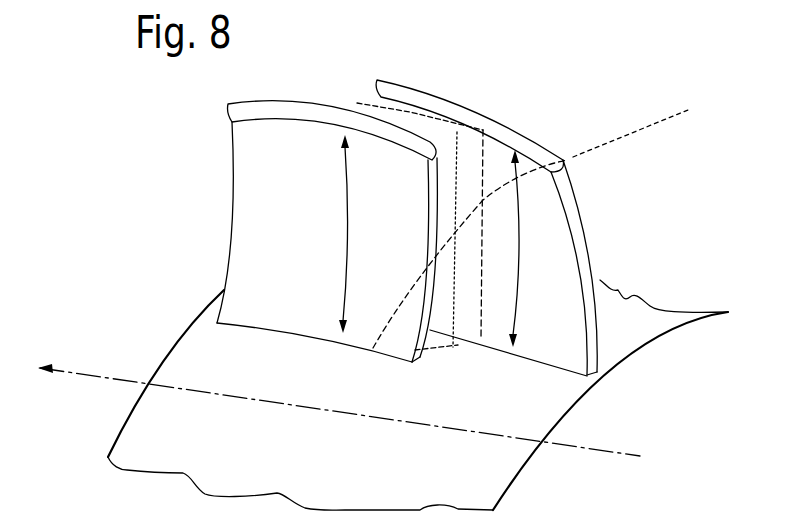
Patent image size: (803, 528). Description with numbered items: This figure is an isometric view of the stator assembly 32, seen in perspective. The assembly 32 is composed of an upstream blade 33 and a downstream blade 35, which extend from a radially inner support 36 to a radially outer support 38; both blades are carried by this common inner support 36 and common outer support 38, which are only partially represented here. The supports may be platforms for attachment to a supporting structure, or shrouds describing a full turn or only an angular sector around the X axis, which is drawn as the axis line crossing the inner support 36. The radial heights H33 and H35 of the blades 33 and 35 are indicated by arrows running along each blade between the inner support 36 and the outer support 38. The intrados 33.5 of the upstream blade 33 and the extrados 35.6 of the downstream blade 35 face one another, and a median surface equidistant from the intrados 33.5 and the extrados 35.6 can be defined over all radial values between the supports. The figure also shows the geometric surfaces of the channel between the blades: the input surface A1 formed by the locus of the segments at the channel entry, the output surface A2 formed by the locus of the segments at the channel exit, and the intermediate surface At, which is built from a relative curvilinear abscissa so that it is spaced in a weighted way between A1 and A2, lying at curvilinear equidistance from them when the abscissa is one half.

The stator assembly 32 is at (118, 313).
The upstream blade 33 is at (600, 237).
The downstream blade 35 is at (226, 226).
The radially inner support 36 is at (443, 492).
The radially outer support 38 is at (670, 118).
The intrados 33.5 is at (582, 346).
The extrados 35.6 is at (287, 318).
The radial height of the upstream blade H33 is at (326, 234).
The radial height of the downstream blade H35 is at (539, 248).
The input surface A1 is at (483, 142).
The output surface A2 is at (370, 100).
The intermediate surface At is at (418, 111).
The X axis X is at (70, 376).